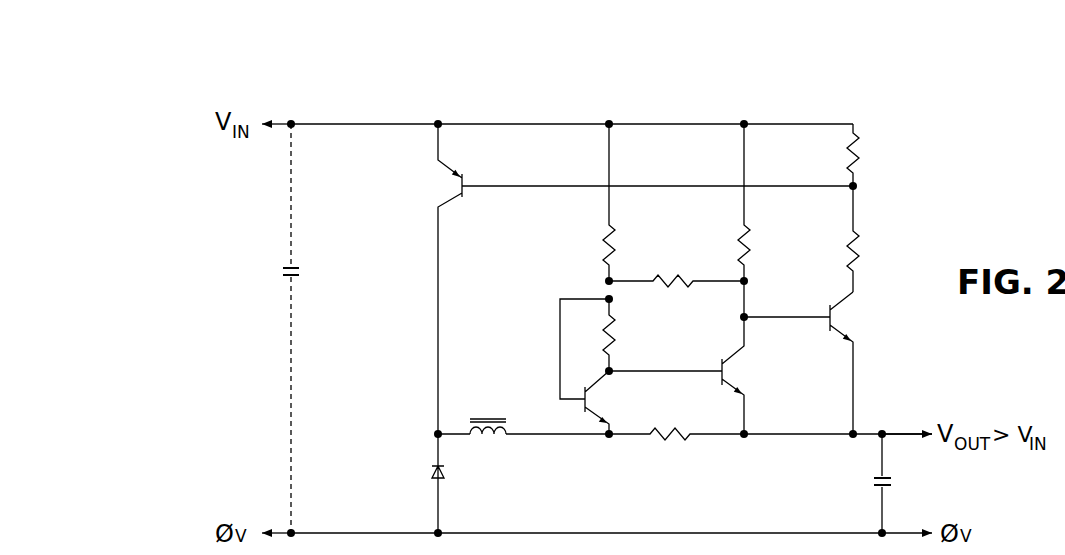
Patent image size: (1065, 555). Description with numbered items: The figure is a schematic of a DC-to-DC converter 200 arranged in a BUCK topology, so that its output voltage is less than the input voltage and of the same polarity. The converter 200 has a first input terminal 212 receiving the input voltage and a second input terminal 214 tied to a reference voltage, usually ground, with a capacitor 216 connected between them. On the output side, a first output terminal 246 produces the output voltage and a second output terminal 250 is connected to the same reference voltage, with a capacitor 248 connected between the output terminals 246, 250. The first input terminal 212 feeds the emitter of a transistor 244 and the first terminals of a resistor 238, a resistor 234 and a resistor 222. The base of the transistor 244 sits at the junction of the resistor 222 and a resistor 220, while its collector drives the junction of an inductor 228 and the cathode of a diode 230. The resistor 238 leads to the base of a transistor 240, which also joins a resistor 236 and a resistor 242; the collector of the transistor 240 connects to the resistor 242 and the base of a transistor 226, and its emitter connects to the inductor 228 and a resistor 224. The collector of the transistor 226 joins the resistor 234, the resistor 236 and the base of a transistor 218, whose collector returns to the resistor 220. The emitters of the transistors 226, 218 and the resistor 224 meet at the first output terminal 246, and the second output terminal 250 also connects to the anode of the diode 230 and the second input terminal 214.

The DC-to-DC converter 200 is at (210, 92).
The first input terminal 212 is at (262, 122).
The second input terminal 214 is at (276, 530).
The capacitor 216 is at (283, 268).
The transistor 218 is at (840, 327).
The resistor 220 is at (858, 256).
The resistor 222 is at (858, 155).
The resistor 224 is at (678, 440).
The transistor 226 is at (728, 381).
The inductor 228 is at (486, 440).
The diode 230 is at (430, 470).
The resistor 234 is at (736, 238).
The resistor 236 is at (678, 290).
The resistor 238 is at (600, 236).
The transistor 240 is at (597, 412).
The resistor 242 is at (616, 340).
The transistor 244 is at (452, 168).
The first output terminal 246 is at (928, 432).
The capacitor 248 is at (876, 486).
The second output terminal 250 is at (928, 530).